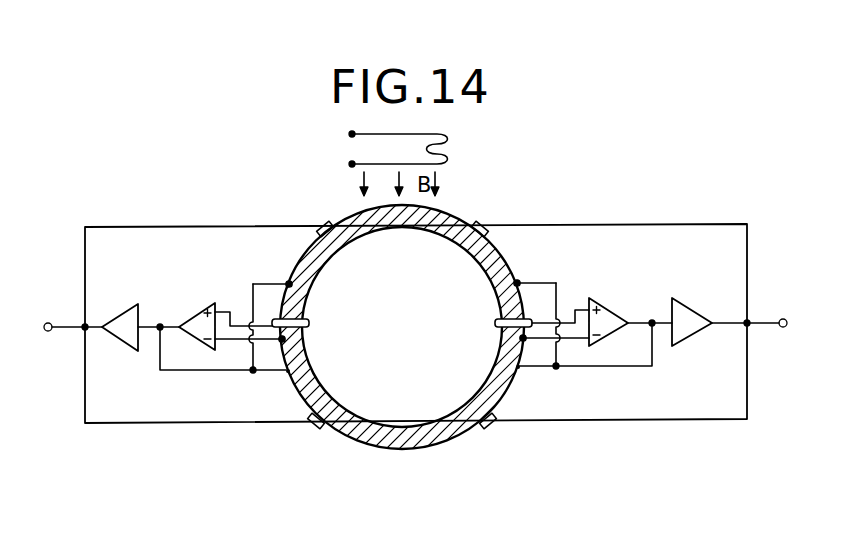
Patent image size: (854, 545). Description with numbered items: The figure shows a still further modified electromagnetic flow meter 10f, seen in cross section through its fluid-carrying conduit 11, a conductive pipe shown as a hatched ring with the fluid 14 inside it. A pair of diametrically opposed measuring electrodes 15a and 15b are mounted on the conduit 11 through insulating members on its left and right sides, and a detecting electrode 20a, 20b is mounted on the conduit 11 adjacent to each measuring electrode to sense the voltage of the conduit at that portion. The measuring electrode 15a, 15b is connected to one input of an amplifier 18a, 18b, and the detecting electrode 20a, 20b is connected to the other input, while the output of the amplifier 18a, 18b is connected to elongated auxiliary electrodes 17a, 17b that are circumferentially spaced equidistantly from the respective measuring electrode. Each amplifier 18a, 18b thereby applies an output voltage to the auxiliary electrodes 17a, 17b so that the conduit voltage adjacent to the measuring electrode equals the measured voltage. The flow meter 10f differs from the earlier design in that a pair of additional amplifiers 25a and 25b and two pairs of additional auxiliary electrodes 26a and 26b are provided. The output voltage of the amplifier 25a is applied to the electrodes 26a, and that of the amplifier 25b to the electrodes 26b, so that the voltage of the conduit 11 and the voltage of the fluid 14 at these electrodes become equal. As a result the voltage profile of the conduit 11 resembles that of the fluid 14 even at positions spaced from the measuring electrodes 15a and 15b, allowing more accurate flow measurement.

The electromagnetic flow meter 10f is at (532, 192).
The fluid-carrying conduit 11 is at (367, 228).
The fluid 14 is at (408, 417).
The measuring electrode 15a is at (495, 322).
The measuring electrode 15b is at (310, 323).
The auxiliary electrode 17a is at (519, 282).
The auxiliary electrode 17b is at (287, 283).
The amplifier 18a is at (617, 311).
The amplifier 18b is at (192, 315).
The detecting electrode 20a is at (525, 342).
The detecting electrode 20b is at (281, 342).
The additional amplifier 25a is at (694, 311).
The additional amplifier 25b is at (122, 315).
The additional auxiliary electrode 26a is at (481, 222).
The additional auxiliary electrode 26b is at (323, 222).